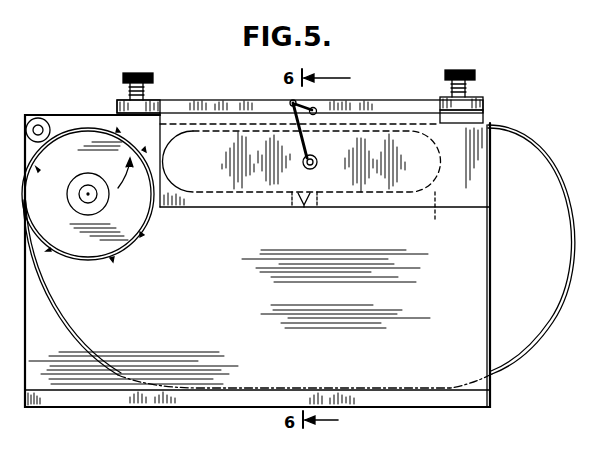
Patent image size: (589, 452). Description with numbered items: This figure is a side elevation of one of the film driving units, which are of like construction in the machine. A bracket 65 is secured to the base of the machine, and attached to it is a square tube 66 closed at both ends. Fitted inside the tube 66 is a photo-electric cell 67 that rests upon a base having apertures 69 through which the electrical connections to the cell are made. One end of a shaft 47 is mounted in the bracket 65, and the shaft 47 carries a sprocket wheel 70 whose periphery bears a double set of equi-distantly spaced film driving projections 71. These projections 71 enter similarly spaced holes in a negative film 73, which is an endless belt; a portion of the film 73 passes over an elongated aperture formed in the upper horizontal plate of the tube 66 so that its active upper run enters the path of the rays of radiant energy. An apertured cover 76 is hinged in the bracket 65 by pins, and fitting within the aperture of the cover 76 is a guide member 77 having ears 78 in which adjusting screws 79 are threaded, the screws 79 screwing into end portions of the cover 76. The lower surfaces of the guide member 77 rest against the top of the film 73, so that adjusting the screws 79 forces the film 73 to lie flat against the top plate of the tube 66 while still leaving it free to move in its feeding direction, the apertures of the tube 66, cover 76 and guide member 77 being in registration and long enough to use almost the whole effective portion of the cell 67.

The shaft 47 is at (91, 198).
The bracket 65 is at (257, 260).
The square tube 66 is at (322, 166).
The photo-electric cell 67 is at (445, 214).
The apertures 69 is at (318, 207).
The sprocket wheel 70 is at (134, 246).
The film driving projections 71 is at (118, 262).
The negative film 73 is at (561, 176).
The apertured cover 76 is at (484, 116).
The guide member 77 is at (366, 101).
The ears 78 is at (117, 104).
The adjusting screws 79 is at (140, 73).